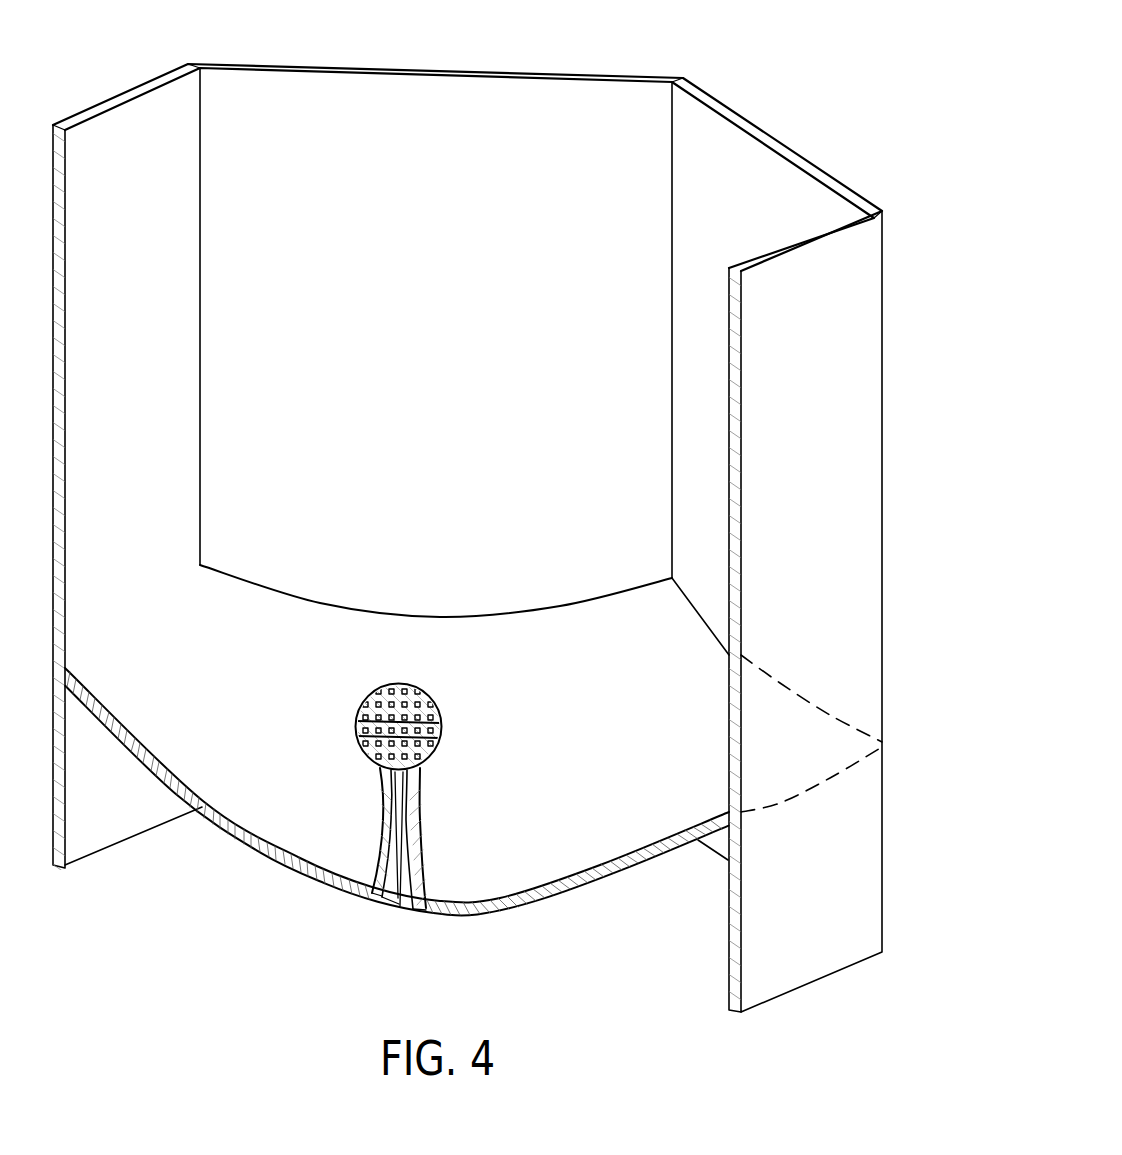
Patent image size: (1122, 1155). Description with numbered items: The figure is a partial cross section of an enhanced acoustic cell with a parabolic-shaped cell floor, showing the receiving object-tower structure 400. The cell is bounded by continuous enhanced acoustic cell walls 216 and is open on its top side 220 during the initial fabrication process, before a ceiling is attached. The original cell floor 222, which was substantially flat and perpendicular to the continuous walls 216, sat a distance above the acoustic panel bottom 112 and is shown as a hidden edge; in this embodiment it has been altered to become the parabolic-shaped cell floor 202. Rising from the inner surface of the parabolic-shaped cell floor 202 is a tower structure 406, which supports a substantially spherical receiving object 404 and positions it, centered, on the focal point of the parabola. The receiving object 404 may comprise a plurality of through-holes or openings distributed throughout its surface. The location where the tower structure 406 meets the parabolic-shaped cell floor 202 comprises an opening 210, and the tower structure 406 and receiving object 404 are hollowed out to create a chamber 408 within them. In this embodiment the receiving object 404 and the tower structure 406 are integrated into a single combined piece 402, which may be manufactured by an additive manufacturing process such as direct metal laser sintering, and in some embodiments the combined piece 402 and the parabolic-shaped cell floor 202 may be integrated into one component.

The acoustic cell with receiving object-tower structure 400 is at (759, 92).
The top side 220 is at (441, 72).
The continuous enhanced acoustic cell walls 216 is at (879, 431).
The original cell floor 222 is at (878, 742).
The acoustic panel bottom 112 is at (848, 968).
The parabolic-shaped cell floor 202 is at (626, 868).
The combined piece 402 is at (450, 683).
The receiving object 404 is at (360, 683).
The tower structure 406 is at (360, 772).
The chamber 408 is at (402, 877).
The opening 210 is at (411, 911).